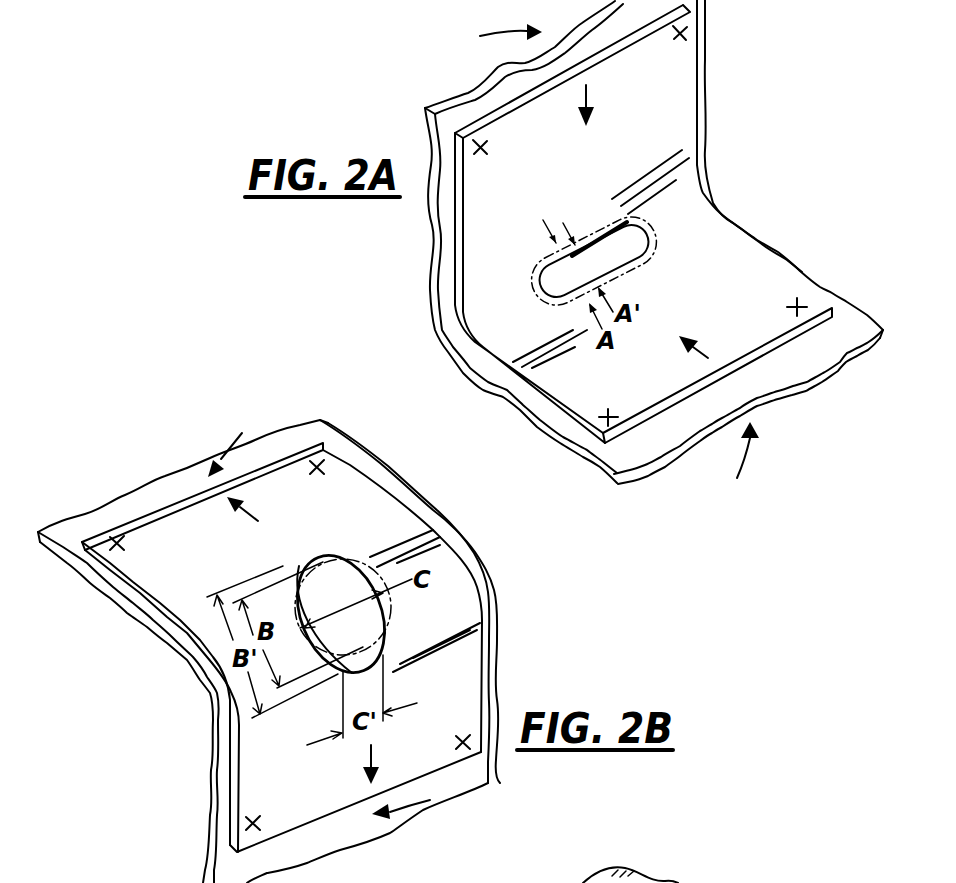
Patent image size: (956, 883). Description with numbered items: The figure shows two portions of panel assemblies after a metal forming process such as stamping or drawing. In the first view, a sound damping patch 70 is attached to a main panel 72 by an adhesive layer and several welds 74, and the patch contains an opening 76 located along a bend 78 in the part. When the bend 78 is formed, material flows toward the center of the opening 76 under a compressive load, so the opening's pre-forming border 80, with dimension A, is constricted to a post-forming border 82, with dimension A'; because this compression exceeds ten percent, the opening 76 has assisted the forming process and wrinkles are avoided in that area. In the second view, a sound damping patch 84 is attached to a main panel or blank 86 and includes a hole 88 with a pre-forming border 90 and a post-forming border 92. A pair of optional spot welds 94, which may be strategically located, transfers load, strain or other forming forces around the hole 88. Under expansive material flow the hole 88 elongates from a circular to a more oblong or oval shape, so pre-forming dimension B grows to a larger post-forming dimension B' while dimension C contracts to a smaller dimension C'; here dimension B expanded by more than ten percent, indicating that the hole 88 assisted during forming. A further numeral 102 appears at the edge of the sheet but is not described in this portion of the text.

In FIG. 2A, the sound damping patch 70 is at (763, 278).
In FIG. 2A, the main panel 72 is at (656, 436).
In FIG. 2A, the welds 74 is at (675, 36).
In FIG. 2A, the opening 76 is at (638, 228).
In FIG. 2A, the bend 78 is at (696, 188).
In FIG. 2A, the pre-forming border 80 is at (581, 231).
In FIG. 2A, the post-forming border 82 is at (605, 232).
In FIG. 2B, the sound damping patch 84 is at (465, 681).
In FIG. 2B, the main panel or blank 86 is at (327, 422).
In FIG. 2B, the hole 88 is at (318, 587).
In FIG. 2B, the pre-forming border 90 is at (393, 603).
In FIG. 2B, the post-forming border 92 is at (312, 557).
In FIG. 2B, the welds 94 is at (121, 544).
In FIG. 2B, the adjacent workpiece fragment 102 is at (684, 873).